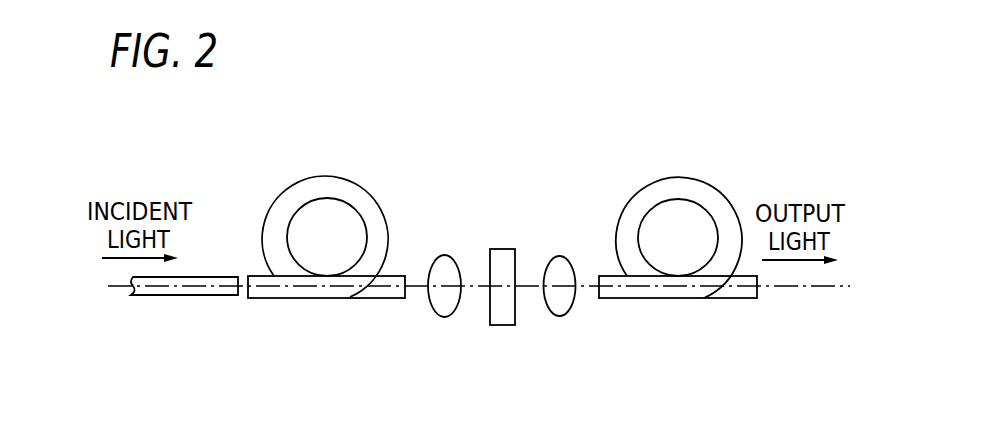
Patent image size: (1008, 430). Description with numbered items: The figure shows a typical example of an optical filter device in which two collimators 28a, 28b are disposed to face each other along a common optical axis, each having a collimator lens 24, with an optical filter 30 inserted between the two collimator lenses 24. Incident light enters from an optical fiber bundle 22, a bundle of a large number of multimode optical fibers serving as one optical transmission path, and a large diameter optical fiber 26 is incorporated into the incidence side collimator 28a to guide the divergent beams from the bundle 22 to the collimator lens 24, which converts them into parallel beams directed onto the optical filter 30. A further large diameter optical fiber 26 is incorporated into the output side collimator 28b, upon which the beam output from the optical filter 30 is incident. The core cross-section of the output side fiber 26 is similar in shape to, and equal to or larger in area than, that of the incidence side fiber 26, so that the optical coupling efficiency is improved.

The optical fiber bundle 22 is at (195, 297).
The collimator lens 24 is at (444, 263).
The large diameter optical fiber 26 is at (284, 204).
The incidence side collimator 28a is at (463, 340).
The output side collimator 28b is at (802, 345).
The optical filter 30 is at (500, 253).